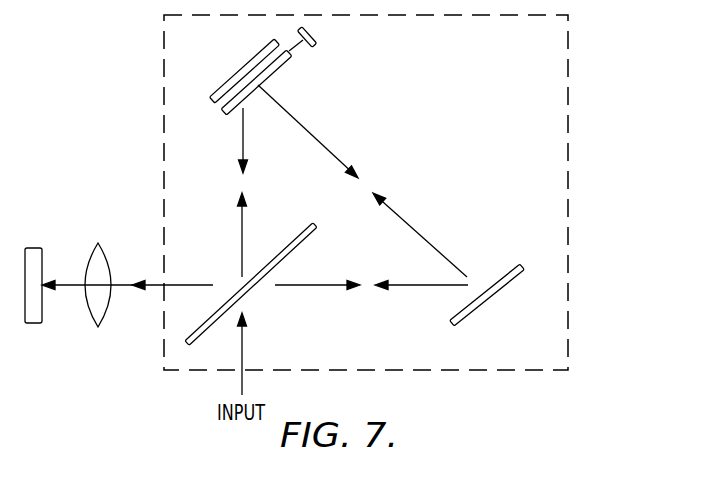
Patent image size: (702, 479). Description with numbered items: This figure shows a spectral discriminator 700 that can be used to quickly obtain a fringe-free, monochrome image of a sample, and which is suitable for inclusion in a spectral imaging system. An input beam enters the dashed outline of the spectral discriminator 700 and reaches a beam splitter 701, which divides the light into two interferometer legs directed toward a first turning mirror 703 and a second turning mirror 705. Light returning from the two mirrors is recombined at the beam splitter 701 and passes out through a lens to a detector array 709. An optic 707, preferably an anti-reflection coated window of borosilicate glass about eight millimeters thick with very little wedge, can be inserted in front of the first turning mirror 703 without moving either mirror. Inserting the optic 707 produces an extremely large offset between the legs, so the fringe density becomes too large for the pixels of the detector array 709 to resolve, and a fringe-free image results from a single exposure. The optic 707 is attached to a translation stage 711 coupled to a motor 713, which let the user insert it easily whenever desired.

The spectral discriminator 700 is at (584, 76).
The beam splitter 701 is at (315, 226).
The first turning mirror 703 is at (227, 84).
The second turning mirror 705 is at (508, 265).
The optic 707 is at (270, 77).
The detector array 709 is at (30, 253).
The translation stage 711 is at (296, 47).
The motor 713 is at (317, 35).